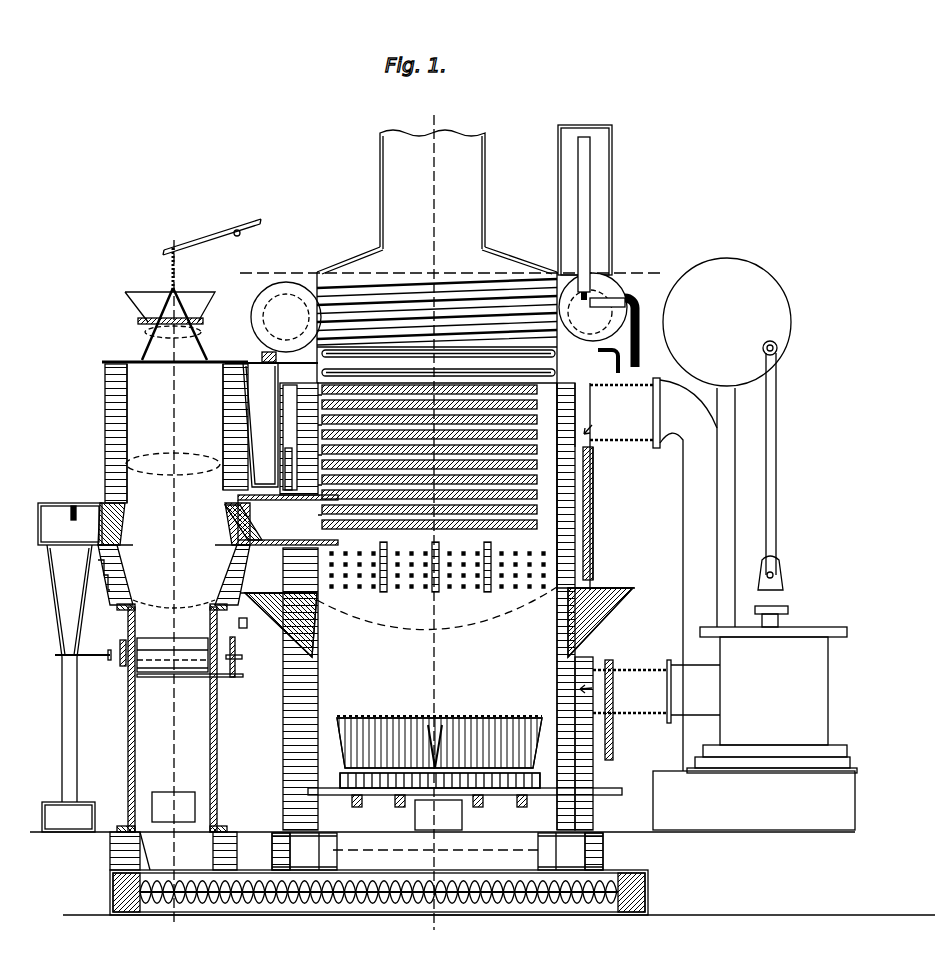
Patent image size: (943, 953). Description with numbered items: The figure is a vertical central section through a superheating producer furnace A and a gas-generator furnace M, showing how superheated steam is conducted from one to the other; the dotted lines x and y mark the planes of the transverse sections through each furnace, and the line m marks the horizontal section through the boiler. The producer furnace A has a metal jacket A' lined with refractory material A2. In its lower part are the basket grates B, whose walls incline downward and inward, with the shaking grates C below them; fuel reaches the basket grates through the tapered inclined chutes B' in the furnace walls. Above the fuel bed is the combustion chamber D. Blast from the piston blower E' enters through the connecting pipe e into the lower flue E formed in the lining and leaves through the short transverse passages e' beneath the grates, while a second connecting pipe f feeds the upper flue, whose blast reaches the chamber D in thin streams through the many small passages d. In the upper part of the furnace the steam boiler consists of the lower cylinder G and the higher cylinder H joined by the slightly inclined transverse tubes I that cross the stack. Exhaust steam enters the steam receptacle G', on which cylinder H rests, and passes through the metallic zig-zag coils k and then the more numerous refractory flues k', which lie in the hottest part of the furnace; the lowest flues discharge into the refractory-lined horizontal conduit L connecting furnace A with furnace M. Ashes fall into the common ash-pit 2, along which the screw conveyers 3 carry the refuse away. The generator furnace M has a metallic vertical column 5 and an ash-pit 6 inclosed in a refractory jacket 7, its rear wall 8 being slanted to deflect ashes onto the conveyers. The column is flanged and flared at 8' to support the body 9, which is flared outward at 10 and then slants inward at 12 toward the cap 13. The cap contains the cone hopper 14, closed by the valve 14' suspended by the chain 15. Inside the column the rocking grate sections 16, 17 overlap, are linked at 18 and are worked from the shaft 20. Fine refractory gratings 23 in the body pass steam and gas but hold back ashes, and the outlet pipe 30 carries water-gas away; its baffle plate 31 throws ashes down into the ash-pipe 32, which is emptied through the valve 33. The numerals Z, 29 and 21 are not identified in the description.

The section line x— x is at (435, 523).
The section line y— y is at (172, 585).
The section line m m is at (450, 269).
The transverse connecting tubes I is at (437, 312).
The zig-zag coils k is at (438, 353).
The refractory flues k' is at (435, 457).
The small air passages d is at (532, 580).
The combustion chamber D is at (437, 636).
The inclined chutes B' is at (437, 622).
The lower air conduit or flue E is at (621, 600).
The superheating producer furnace A is at (590, 486).
The metal jacket A' is at (614, 513).
The basket grates B is at (439, 732).
The short transverse passages e' is at (456, 724).
The shaking grates C is at (465, 802).
The refractory material lining A2 is at (555, 705).
The ash pit center line Z is at (436, 843).
The rear wall of ash-pit 8 is at (136, 851).
The jacket of refractory material 7 is at (238, 850).
The screw conveyers 3 is at (358, 892).
The common ash-pit 2 is at (416, 898).
The metallic cap 13 is at (175, 449).
The cone hopper 14 is at (178, 315).
The cover or valve 14' is at (174, 304).
The chain 15 is at (178, 263).
The outlet pipe 30 is at (70, 524).
The baffle plate 31 is at (84, 514).
The hatched block 29 is at (100, 528).
The inclined sides of body 12 is at (232, 522).
The joint 21 is at (232, 545).
The outward flared part 10 is at (174, 576).
The flanged and flared upper end of column 8' is at (101, 588).
The ash-pipe 32 is at (60, 600).
The valve 33 is at (60, 668).
The gas-generator furnace M is at (73, 773).
The metallic vertical column 5 is at (172, 718).
The grate section 16 is at (150, 640).
The grate section 17 is at (160, 672).
The shaft 20 is at (196, 680).
The link 18 is at (126, 660).
The ash-pit 6 is at (179, 810).
The lower cylinder G is at (286, 317).
The steam receptacle G' is at (421, 364).
The body of generator furnace 9 is at (280, 429).
The horizontal connecting conduit L is at (288, 520).
The refractory gratings 23 is at (252, 522).
The higher cylinder H is at (597, 252).
The connecting pipe f is at (650, 574).
The piston blower or compressor E' is at (755, 544).
The connecting pipe e is at (650, 691).